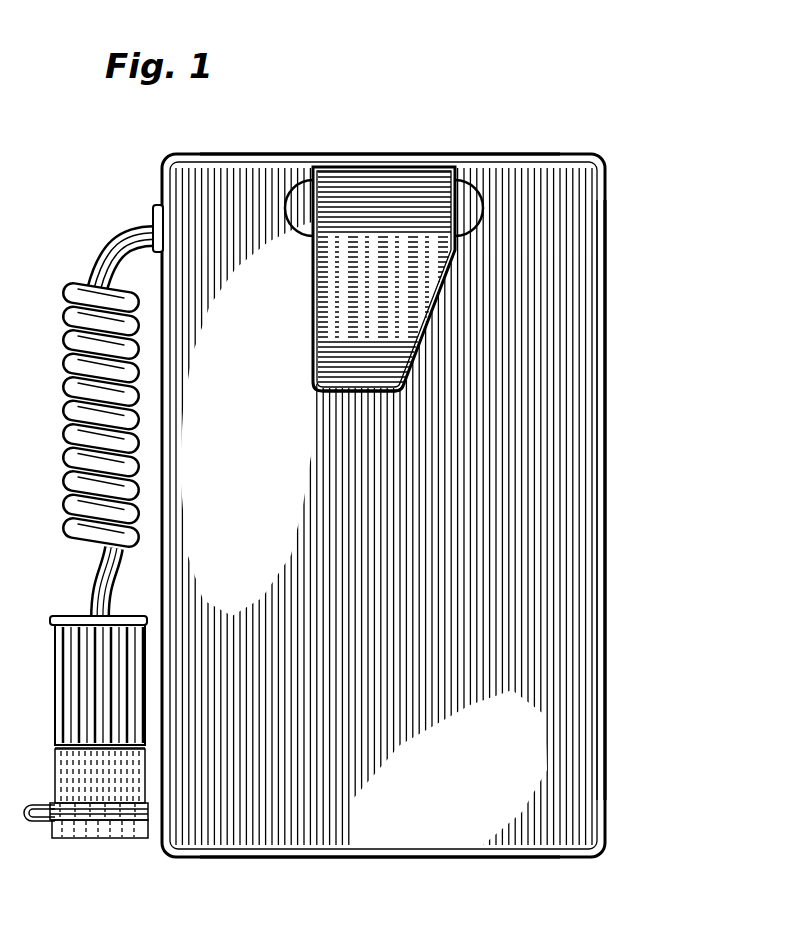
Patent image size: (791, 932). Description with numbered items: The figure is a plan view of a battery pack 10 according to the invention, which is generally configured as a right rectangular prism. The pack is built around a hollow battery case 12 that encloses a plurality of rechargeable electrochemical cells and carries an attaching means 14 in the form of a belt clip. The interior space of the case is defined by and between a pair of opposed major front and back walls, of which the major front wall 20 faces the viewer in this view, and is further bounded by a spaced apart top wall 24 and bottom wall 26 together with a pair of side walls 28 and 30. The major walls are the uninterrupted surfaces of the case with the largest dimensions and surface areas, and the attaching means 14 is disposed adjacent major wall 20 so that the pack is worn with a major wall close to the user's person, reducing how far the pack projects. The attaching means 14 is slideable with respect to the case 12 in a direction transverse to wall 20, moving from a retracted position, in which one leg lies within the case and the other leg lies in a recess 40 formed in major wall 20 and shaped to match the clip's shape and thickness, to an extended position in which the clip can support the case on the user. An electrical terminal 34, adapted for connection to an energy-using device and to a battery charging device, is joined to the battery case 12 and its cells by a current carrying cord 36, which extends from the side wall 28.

The battery pack 10 is at (327, 493).
The battery case 12 is at (590, 200).
The attaching means 14 is at (340, 245).
The major front wall 20 is at (585, 478).
The top wall 24 is at (258, 154).
The bottom wall 26 is at (254, 857).
The side wall 28 is at (162, 180).
The side wall 30 is at (607, 365).
The electrical terminal 34 is at (62, 776).
The current carrying cord 36 is at (63, 390).
The recess 40 is at (313, 378).